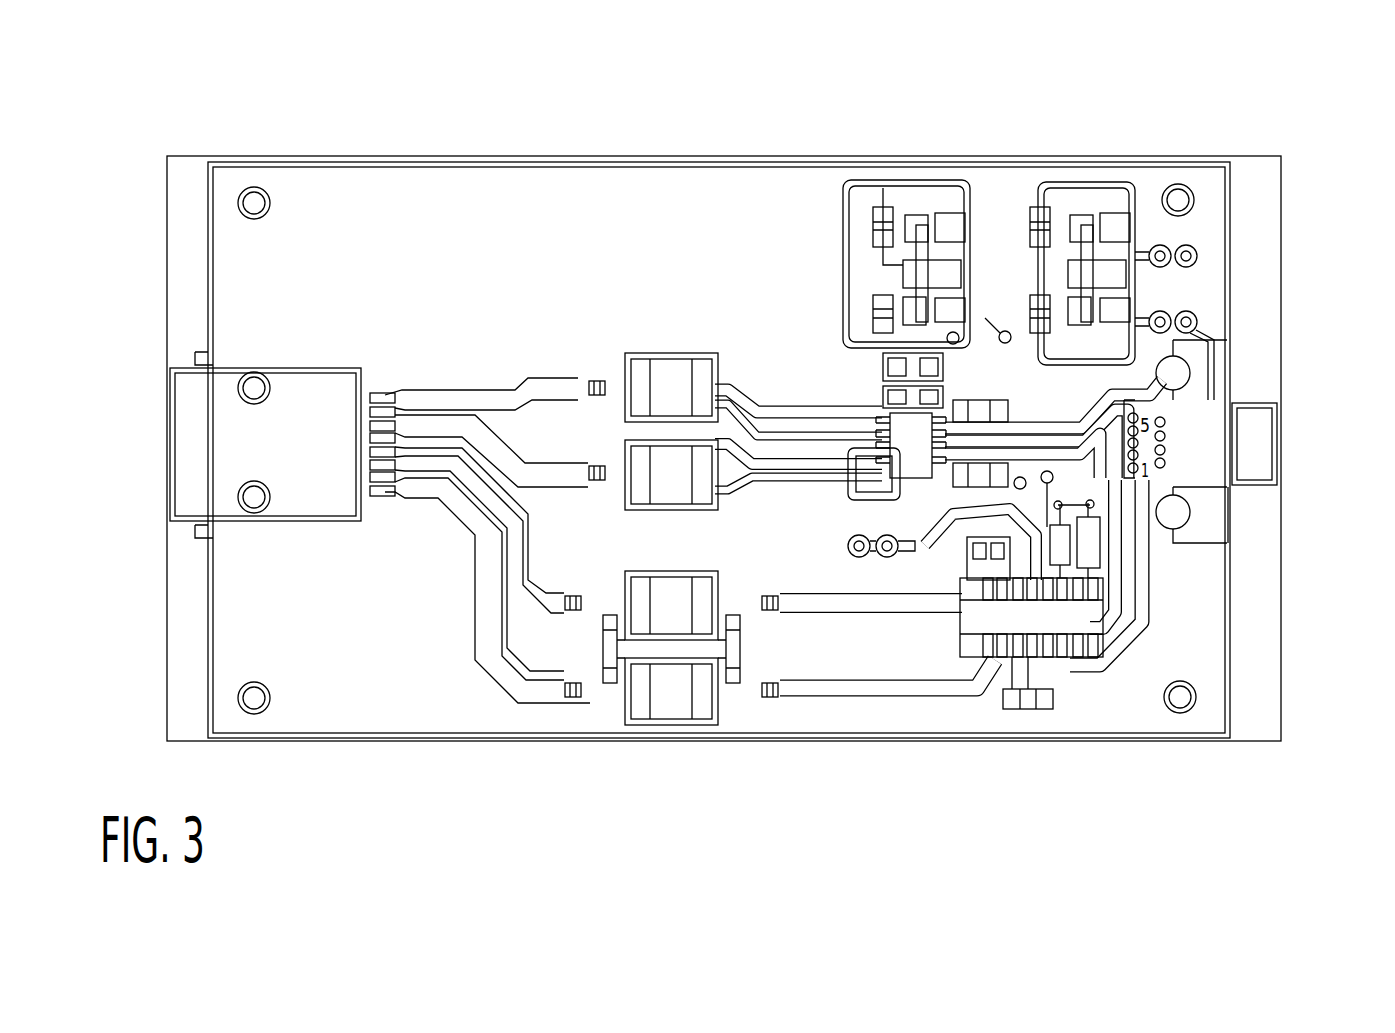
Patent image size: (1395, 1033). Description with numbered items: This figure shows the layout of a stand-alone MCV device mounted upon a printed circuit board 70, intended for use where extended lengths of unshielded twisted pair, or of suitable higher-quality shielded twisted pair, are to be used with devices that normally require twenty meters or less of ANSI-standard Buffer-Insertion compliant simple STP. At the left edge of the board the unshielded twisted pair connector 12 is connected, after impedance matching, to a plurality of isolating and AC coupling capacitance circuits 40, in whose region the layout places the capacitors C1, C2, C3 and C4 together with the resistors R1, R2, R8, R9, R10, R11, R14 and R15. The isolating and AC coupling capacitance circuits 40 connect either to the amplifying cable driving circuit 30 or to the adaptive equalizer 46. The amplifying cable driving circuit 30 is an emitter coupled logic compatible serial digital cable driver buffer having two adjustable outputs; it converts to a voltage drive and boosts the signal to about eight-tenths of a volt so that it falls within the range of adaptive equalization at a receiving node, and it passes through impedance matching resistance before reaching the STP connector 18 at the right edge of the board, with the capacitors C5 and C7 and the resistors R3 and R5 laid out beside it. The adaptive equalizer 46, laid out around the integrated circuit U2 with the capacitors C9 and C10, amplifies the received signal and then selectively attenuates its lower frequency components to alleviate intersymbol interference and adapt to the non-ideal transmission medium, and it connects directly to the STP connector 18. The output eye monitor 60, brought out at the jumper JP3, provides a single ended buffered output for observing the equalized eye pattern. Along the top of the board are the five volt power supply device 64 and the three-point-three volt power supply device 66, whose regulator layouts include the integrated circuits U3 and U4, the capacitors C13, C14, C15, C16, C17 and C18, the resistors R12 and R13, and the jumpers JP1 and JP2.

The printed circuit board 70 is at (470, 232).
The unshielded twisted pair connector 12 is at (167, 412).
The STP connector 18 is at (1260, 421).
The amplifying cable driving circuit 30 is at (926, 286).
The isolating and AC coupling capacitance circuits 40 is at (706, 609).
The output eye monitor 60 is at (849, 712).
The adaptive equalizer 46 is at (1033, 667).
The 3.3 volt power supply device 66 is at (926, 214).
The 5 volt power supply device 64 is at (1107, 225).
The capacitor C1 is at (671, 374).
The capacitor C2 is at (671, 487).
The capacitor C3 is at (671, 592).
The capacitor C4 is at (520, 775).
The capacitor C5 is at (886, 370).
The capacitor C7 is at (886, 408).
The capacitor C9 is at (1028, 694).
The capacitor C10 is at (972, 558).
The capacitor C13 is at (1103, 212).
The capacitor C14 is at (1024, 314).
The capacitor C15 is at (996, 331).
The capacitor C16 is at (942, 212).
The capacitor C17 is at (873, 312).
The capacitor C18 is at (1107, 328).
The resistor R1 is at (606, 397).
The resistor R2 is at (606, 485).
The resistor R3 is at (874, 488).
The resistor R5 is at (980, 397).
The resistor R8 is at (573, 588).
The resistor R9 is at (573, 675).
The resistor R10 is at (765, 588).
The resistor R11 is at (765, 703).
The resistor R12 is at (1022, 227).
The resistor R13 is at (873, 228).
The resistor R14 is at (691, 649).
The resistor R15 is at (749, 649).
The equalizer IC U2 is at (1016, 617).
The regulator IC U3 is at (952, 270).
The regulator IC U4 is at (1165, 272).
The jumper JP1 is at (1166, 242).
The jumper JP2 is at (1174, 342).
The jumper JP3 (eye monitor test point) JP3 is at (852, 573).